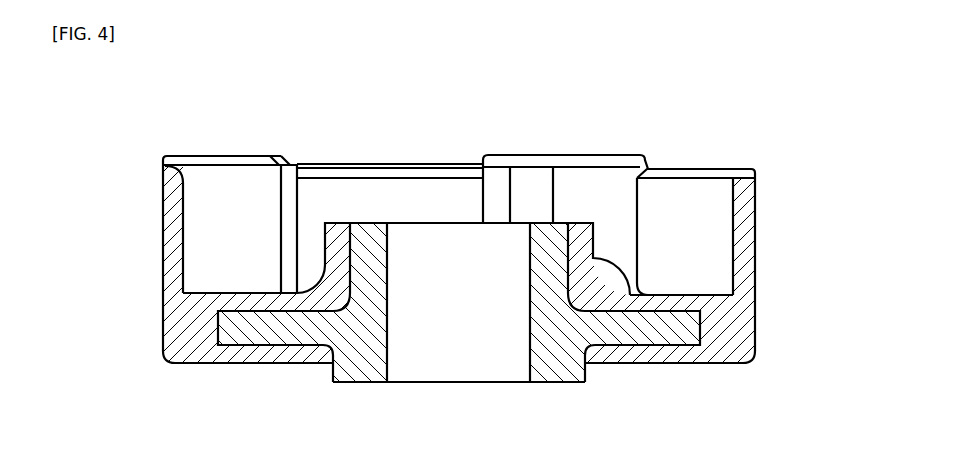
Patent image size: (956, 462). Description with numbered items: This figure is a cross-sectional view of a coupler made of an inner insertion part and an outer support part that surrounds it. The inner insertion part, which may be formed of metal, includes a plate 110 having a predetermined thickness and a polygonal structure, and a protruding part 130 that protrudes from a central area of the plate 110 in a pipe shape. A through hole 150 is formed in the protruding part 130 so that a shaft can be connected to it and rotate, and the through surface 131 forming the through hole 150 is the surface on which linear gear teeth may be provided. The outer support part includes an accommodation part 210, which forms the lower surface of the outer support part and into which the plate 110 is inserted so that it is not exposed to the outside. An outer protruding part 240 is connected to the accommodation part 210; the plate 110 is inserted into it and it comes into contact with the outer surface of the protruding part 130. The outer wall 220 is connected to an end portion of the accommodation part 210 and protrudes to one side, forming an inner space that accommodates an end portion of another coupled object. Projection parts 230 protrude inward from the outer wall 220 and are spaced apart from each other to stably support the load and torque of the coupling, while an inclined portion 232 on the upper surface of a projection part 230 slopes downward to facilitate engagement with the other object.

The plate 110 is at (251, 334).
The protruding part 130 is at (367, 262).
The through surface 131 is at (390, 352).
The through hole 150 is at (491, 342).
The accommodation part 210 is at (712, 298).
The outer wall 220 is at (163, 243).
The projection part 230 is at (218, 185).
The inclined portion 232 is at (293, 163).
The outer protruding part 240 is at (323, 231).